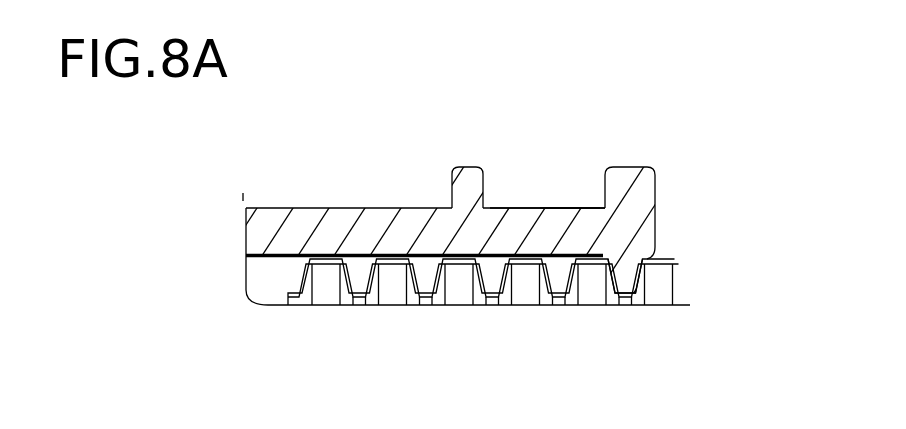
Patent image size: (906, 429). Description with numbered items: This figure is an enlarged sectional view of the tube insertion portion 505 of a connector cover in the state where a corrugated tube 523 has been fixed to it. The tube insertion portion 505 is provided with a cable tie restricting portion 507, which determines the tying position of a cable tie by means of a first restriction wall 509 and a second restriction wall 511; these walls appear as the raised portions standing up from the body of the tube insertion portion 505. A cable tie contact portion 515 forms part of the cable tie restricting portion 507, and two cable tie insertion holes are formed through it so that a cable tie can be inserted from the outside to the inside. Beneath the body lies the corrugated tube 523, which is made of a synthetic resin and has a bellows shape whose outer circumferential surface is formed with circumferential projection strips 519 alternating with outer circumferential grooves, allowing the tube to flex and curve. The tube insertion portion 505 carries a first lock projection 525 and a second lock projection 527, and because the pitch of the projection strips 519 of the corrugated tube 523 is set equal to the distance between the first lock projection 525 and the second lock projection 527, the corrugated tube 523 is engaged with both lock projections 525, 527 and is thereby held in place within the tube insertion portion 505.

The tube insertion portion 505 is at (415, 215).
The cable tie restricting portion 507 is at (574, 186).
The first restriction wall 509 is at (640, 188).
The second restriction wall 511 is at (452, 188).
The cable tie contact portion 515 is at (523, 208).
The circumferential projection strips 519 is at (355, 283).
The corrugated tube 523 is at (305, 274).
The first lock projection 525 is at (621, 277).
The second lock projection 527 is at (368, 260).